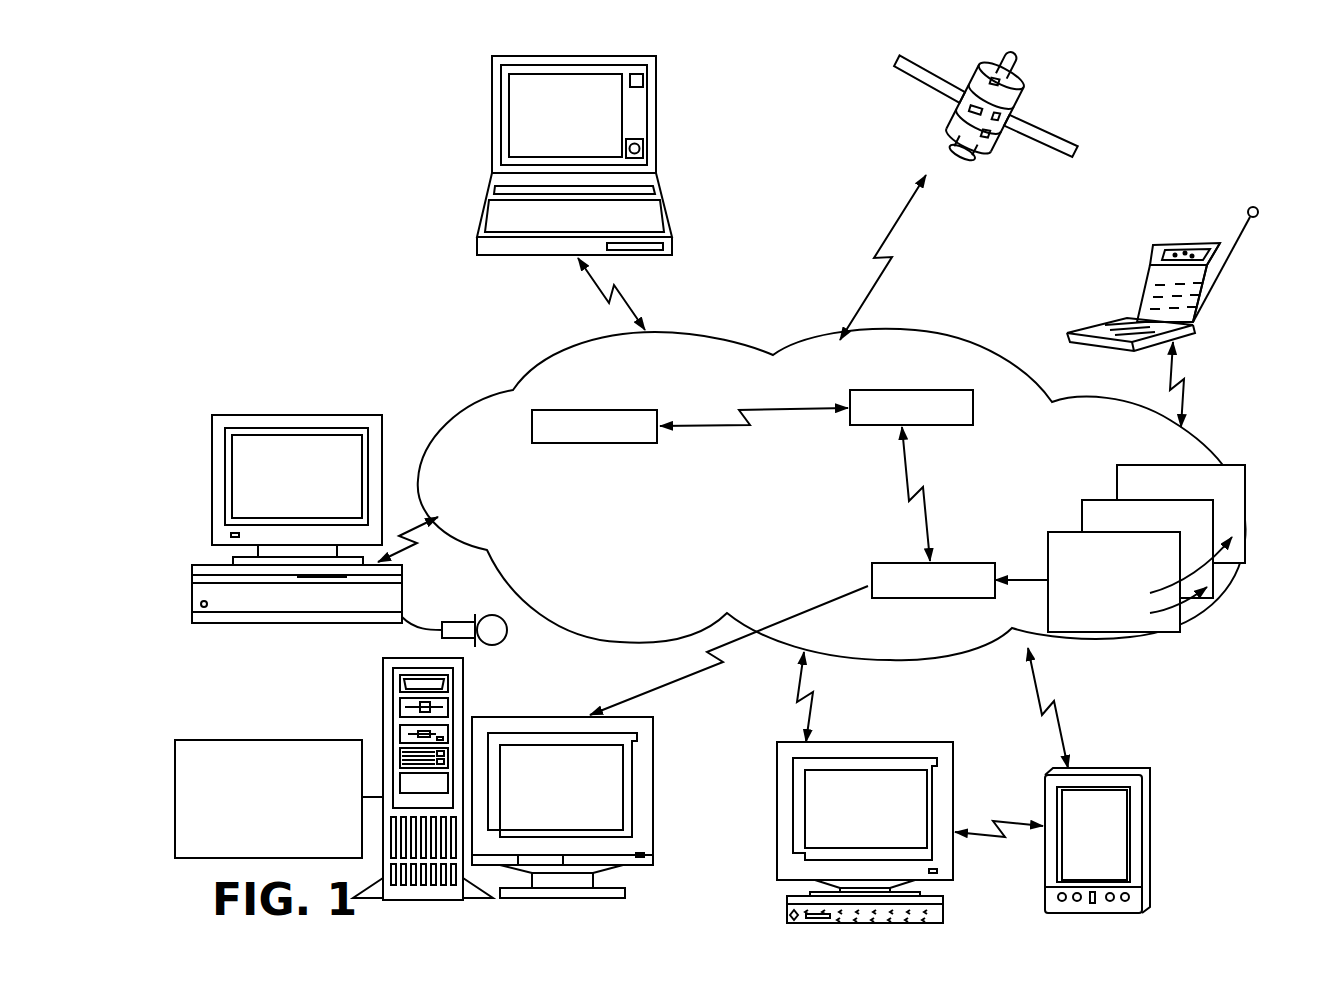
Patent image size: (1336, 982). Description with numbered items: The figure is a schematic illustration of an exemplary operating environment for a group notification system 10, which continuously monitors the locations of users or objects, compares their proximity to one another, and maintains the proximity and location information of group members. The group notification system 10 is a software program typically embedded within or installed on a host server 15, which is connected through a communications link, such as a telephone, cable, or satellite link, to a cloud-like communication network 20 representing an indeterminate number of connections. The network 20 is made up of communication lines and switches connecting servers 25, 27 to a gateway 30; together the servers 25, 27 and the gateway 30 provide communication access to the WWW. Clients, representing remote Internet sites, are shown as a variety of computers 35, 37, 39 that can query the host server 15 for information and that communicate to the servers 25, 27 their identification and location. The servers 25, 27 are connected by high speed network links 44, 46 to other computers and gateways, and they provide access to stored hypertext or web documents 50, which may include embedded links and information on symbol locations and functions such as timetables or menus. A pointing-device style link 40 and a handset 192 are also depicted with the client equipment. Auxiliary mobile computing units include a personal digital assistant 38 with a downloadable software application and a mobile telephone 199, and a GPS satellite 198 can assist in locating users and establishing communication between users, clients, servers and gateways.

The group notification system 10 is at (243, 740).
The host server 15 is at (383, 693).
The communication network 20 is at (748, 343).
The server 25 is at (908, 563).
The server 27 is at (927, 390).
The gateway 30 is at (590, 443).
The client computer 35 is at (657, 137).
The client computer 37 is at (925, 742).
The personal digital assistant 38 is at (1045, 805).
The client computer 39 is at (270, 415).
The communication link 40 is at (832, 597).
The network link 44 is at (920, 527).
The network link 46 is at (740, 415).
The hypertext documents 50 is at (1262, 533).
The telephone / microphone 192 is at (472, 622).
The GPS satellite 198 is at (970, 73).
The mobile telephone 199 is at (1148, 290).